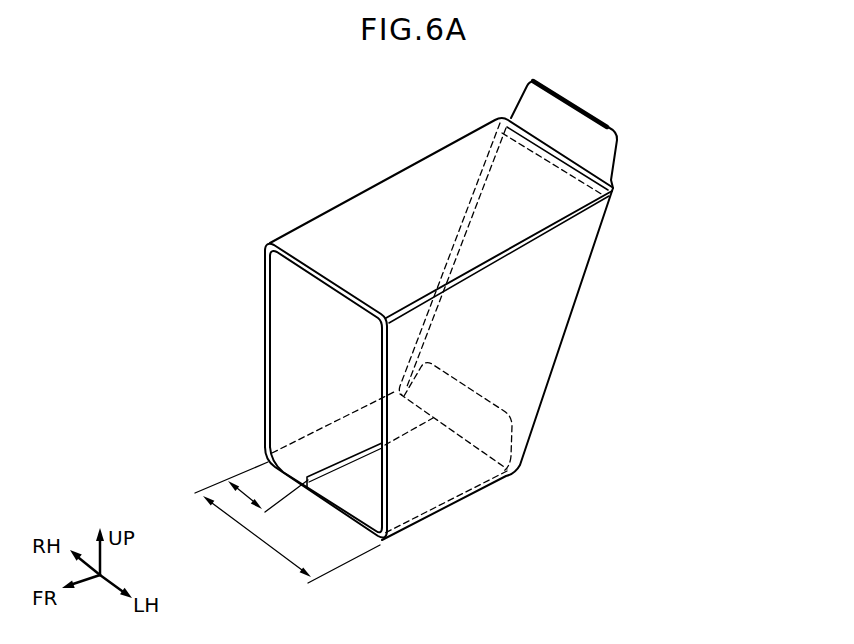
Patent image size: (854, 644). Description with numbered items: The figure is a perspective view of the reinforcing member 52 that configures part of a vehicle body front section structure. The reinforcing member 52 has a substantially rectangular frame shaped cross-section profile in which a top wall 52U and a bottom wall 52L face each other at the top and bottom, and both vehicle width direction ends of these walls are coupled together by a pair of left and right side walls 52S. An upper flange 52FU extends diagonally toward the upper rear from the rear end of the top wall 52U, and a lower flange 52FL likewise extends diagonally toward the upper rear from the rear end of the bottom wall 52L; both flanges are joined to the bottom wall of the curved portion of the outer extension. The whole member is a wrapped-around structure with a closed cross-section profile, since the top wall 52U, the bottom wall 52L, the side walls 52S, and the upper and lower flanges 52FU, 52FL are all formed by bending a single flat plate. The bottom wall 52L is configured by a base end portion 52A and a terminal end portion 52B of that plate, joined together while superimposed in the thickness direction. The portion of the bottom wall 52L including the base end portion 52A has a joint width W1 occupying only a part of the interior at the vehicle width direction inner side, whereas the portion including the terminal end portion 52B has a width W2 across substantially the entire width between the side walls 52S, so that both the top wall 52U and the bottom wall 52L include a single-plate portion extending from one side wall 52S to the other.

The reinforcing member 52 is at (290, 186).
The top wall 52U is at (363, 207).
The side walls 52S is at (283, 288).
The bottom wall 52L is at (361, 497).
The base end portion 52A is at (340, 446).
The terminal end portion 52B is at (283, 470).
The upper flange 52FU is at (596, 138).
The lower flange 52FL is at (487, 432).
The width W1 is at (228, 481).
The width W2 is at (250, 533).